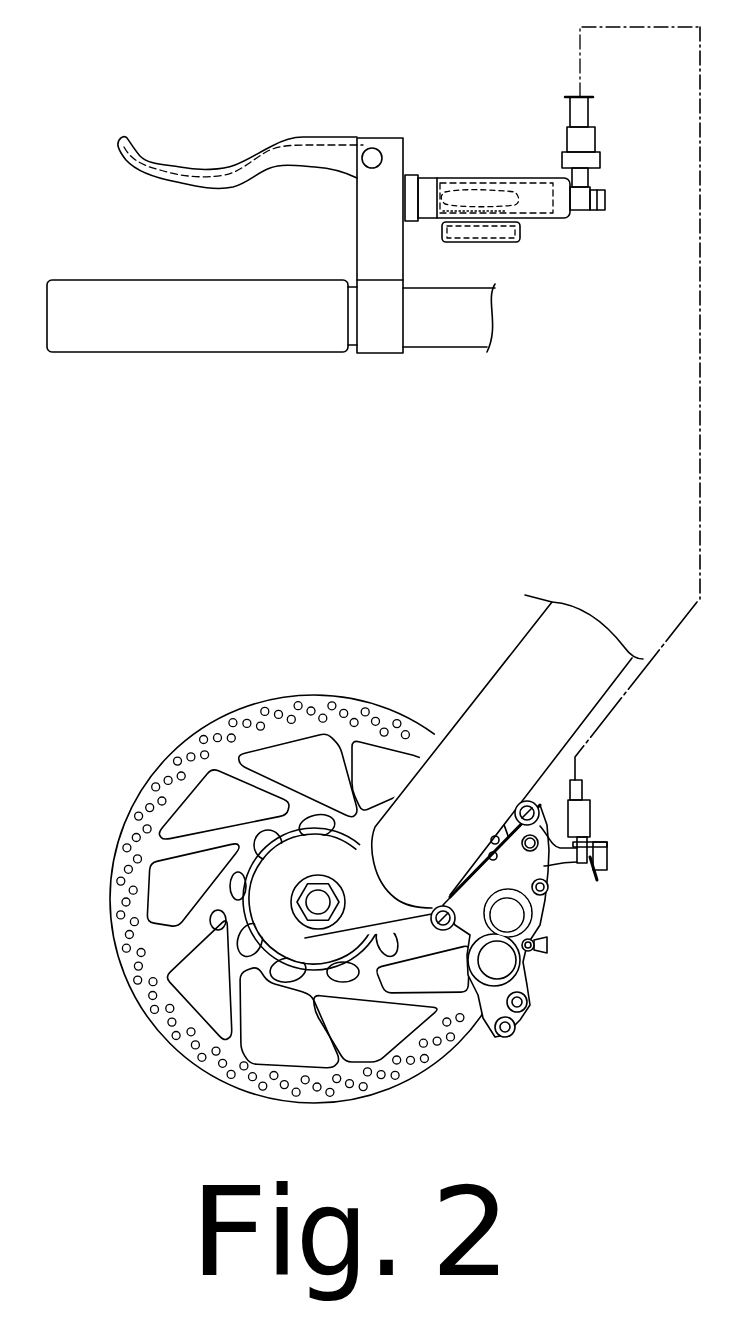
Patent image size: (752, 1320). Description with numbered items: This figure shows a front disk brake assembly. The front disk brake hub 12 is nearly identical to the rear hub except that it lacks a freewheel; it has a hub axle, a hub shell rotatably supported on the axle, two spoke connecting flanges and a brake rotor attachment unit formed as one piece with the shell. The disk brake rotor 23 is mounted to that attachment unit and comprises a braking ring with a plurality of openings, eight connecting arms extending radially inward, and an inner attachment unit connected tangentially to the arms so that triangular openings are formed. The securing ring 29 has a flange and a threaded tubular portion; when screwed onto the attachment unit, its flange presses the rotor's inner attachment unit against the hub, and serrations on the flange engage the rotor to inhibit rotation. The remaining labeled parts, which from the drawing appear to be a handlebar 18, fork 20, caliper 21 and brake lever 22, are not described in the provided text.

The front disk brake hub 12 is at (306, 902).
The handlebar 18 is at (463, 350).
The front fork 20 is at (333, 682).
The brake caliper 21 is at (556, 917).
The brake lever 22 is at (278, 128).
The disk brake rotor 23 is at (192, 732).
The securing ring 29 is at (307, 952).